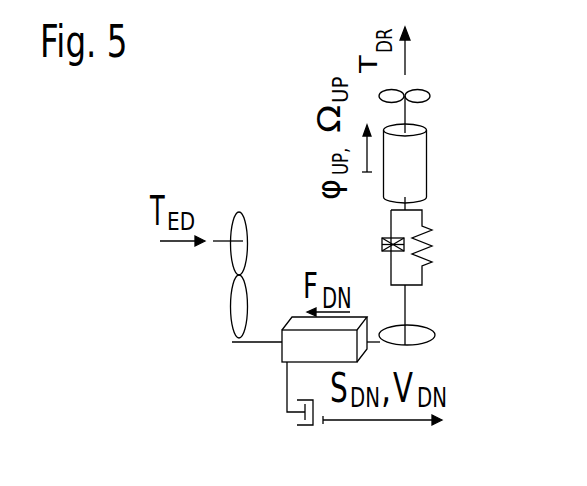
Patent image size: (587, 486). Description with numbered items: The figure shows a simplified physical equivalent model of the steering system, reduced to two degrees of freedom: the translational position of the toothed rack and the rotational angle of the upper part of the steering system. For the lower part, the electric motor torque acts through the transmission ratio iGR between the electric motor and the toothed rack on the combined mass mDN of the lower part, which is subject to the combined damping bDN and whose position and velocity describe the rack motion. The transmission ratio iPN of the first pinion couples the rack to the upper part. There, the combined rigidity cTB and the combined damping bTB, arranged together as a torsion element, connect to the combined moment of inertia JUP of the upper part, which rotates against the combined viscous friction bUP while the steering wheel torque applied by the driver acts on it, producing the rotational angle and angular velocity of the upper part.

The transmission ratio between electric motor and toothed rack iGR is at (259, 276).
The combined mass of the lower part of the steering system mDN is at (324, 342).
The combined damping of the lower part of the steering system bDN is at (304, 414).
The transmission ratio of the first pinion iPN is at (413, 315).
The combined rigidity cTB is at (434, 247).
The combined damping bTB is at (368, 235).
The combined moment of inertia JUP is at (404, 153).
The combined viscous friction bUP is at (431, 90).